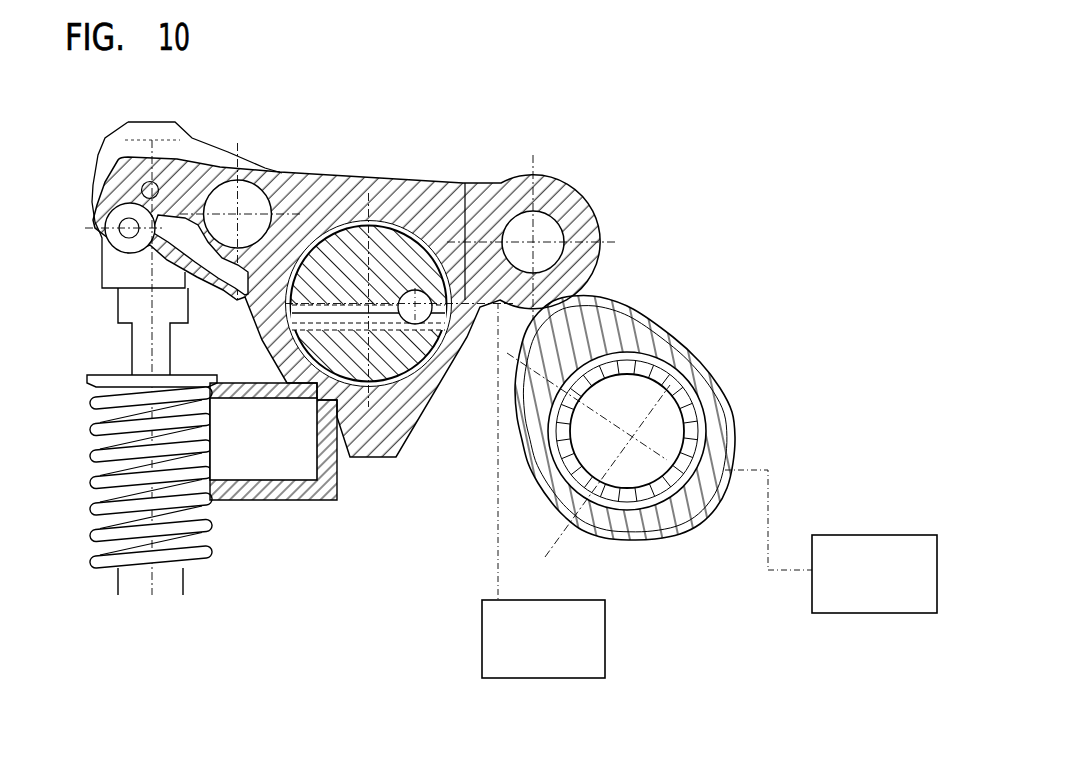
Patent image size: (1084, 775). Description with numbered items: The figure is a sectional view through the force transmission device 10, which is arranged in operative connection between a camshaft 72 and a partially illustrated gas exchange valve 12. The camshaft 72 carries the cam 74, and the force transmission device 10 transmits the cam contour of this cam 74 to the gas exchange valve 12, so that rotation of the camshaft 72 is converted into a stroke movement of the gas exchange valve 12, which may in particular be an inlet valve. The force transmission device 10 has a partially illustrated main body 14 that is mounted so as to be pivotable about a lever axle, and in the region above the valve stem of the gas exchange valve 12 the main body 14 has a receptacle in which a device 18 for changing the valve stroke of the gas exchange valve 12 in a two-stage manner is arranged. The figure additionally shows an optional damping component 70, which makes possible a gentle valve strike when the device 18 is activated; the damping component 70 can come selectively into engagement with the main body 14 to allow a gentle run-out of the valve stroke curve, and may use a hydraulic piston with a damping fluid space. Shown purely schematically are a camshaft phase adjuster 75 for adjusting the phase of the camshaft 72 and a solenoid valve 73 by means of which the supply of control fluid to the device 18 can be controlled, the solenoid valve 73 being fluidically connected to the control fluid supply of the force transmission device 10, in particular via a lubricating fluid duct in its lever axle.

The force transmission device 10 is at (441, 156).
The gas exchange valve 12 is at (168, 570).
The main body 14 is at (310, 173).
The device for changing a valve stroke 18 is at (100, 310).
The damping component 70 is at (277, 467).
The camshaft 72 is at (712, 373).
The cam 74 is at (650, 330).
The solenoid valve 73 is at (605, 648).
The camshaft phase adjuster 75 is at (847, 535).